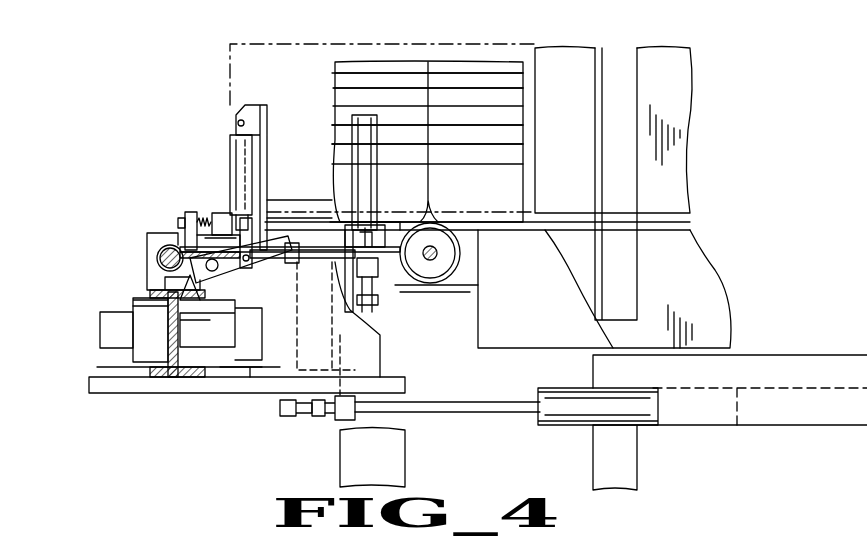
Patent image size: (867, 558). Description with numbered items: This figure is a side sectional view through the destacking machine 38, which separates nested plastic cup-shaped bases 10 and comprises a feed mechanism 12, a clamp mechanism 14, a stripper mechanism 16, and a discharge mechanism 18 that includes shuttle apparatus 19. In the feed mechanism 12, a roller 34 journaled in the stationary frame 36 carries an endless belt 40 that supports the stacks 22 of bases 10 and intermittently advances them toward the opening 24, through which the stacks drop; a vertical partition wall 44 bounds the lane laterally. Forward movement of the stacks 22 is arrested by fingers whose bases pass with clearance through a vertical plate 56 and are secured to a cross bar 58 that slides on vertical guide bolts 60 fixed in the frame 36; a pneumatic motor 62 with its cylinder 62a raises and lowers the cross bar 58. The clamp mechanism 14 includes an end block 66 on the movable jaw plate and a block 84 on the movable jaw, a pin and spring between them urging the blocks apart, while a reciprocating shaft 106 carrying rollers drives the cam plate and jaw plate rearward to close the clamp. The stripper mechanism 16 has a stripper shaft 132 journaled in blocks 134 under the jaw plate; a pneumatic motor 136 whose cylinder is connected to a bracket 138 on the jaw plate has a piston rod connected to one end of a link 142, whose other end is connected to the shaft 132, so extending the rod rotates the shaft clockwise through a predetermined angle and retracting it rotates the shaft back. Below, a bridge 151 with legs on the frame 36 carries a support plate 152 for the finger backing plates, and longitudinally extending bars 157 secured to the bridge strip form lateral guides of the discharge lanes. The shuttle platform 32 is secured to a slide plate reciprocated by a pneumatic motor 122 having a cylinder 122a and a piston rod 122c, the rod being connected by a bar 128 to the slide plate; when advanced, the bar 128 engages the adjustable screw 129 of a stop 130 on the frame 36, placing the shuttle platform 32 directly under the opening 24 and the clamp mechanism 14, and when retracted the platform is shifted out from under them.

The plastic cup-shaped base 10 is at (332, 108).
The feed mechanism 12 is at (665, 216).
The clamp mechanism 14 is at (182, 228).
The stripper mechanism 16 is at (276, 268).
The discharge mechanism 18 is at (100, 357).
The shuttle apparatus 19 is at (412, 395).
The stack 22 is at (415, 62).
The opening 24 is at (278, 68).
The shuttle platform 32 is at (352, 357).
The roller 34 is at (462, 250).
The stationary frame 36 is at (400, 460).
The destacking machine 38 is at (210, 115).
The endless belt 40 is at (690, 226).
The vertical partition wall 44 is at (682, 162).
The vertical plate 56 is at (355, 320).
The cross bar 58 is at (375, 270).
The vertical guide bolt 60 is at (372, 292).
The pneumatic motor 62 is at (376, 196).
The cylinder 62a is at (441, 142).
The end block 66 is at (190, 212).
The block 84 is at (218, 213).
The reciprocating shaft 106 is at (160, 258).
The pneumatic motor 122 is at (705, 392).
The cylinder 122a is at (650, 420).
The piston rod 122c is at (512, 412).
The bar 128 is at (338, 420).
The adjustable screw 129 is at (280, 407).
The stop 130 is at (296, 420).
The stripper shaft 132 is at (233, 250).
The block 134 is at (170, 250).
The pneumatic motor 136 is at (232, 147).
The bracket 138 is at (267, 125).
The link 142 is at (178, 283).
The bridge 151 is at (130, 306).
The support plate 152 is at (135, 298).
The longitudinally extending bar 157 is at (108, 333).